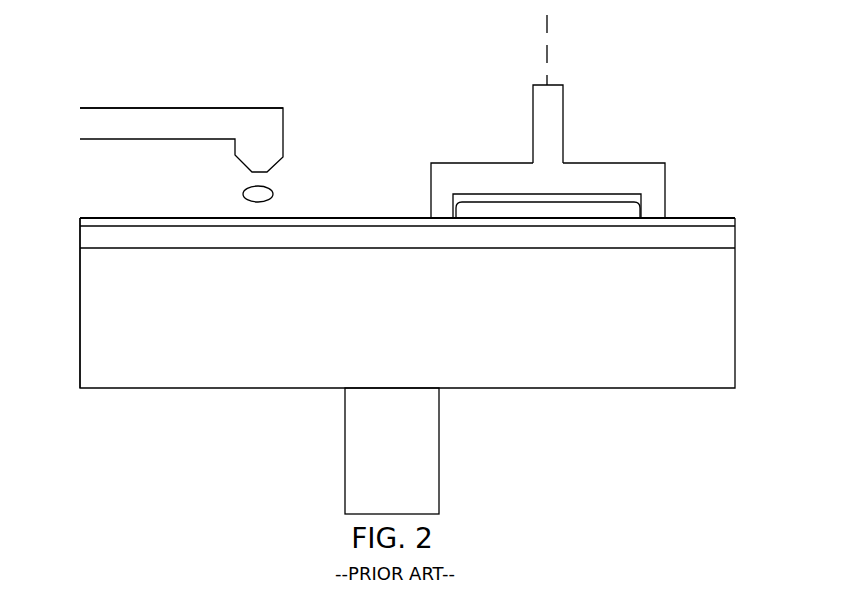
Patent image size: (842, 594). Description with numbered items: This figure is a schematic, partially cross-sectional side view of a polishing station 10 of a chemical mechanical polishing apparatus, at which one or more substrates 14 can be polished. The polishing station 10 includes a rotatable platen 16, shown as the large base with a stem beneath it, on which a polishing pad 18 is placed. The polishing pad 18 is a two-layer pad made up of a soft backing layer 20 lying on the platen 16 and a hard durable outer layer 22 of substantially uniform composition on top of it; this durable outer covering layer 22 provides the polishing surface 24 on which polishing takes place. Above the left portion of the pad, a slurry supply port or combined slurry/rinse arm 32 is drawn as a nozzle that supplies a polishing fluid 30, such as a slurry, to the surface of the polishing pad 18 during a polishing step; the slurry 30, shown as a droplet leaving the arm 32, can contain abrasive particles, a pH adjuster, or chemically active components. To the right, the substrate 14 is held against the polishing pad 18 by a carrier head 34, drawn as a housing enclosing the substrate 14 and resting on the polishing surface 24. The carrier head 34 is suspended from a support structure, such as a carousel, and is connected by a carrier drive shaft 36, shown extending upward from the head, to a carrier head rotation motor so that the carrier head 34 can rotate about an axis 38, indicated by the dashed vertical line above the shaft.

The polishing station 10 is at (228, 77).
The substrate 14 is at (594, 202).
The rotatable platen 16 is at (735, 317).
The polishing pad 18 is at (80, 232).
The soft backing layer 20 is at (735, 238).
The hard durable outer layer 22 is at (735, 218).
The polishing surface 24 is at (332, 217).
The polishing fluid 30 is at (267, 187).
The slurry/rinse arm 32 is at (245, 108).
The carrier head 34 is at (625, 163).
The carrier drive shaft 36 is at (533, 127).
The axis 38 is at (546, 61).